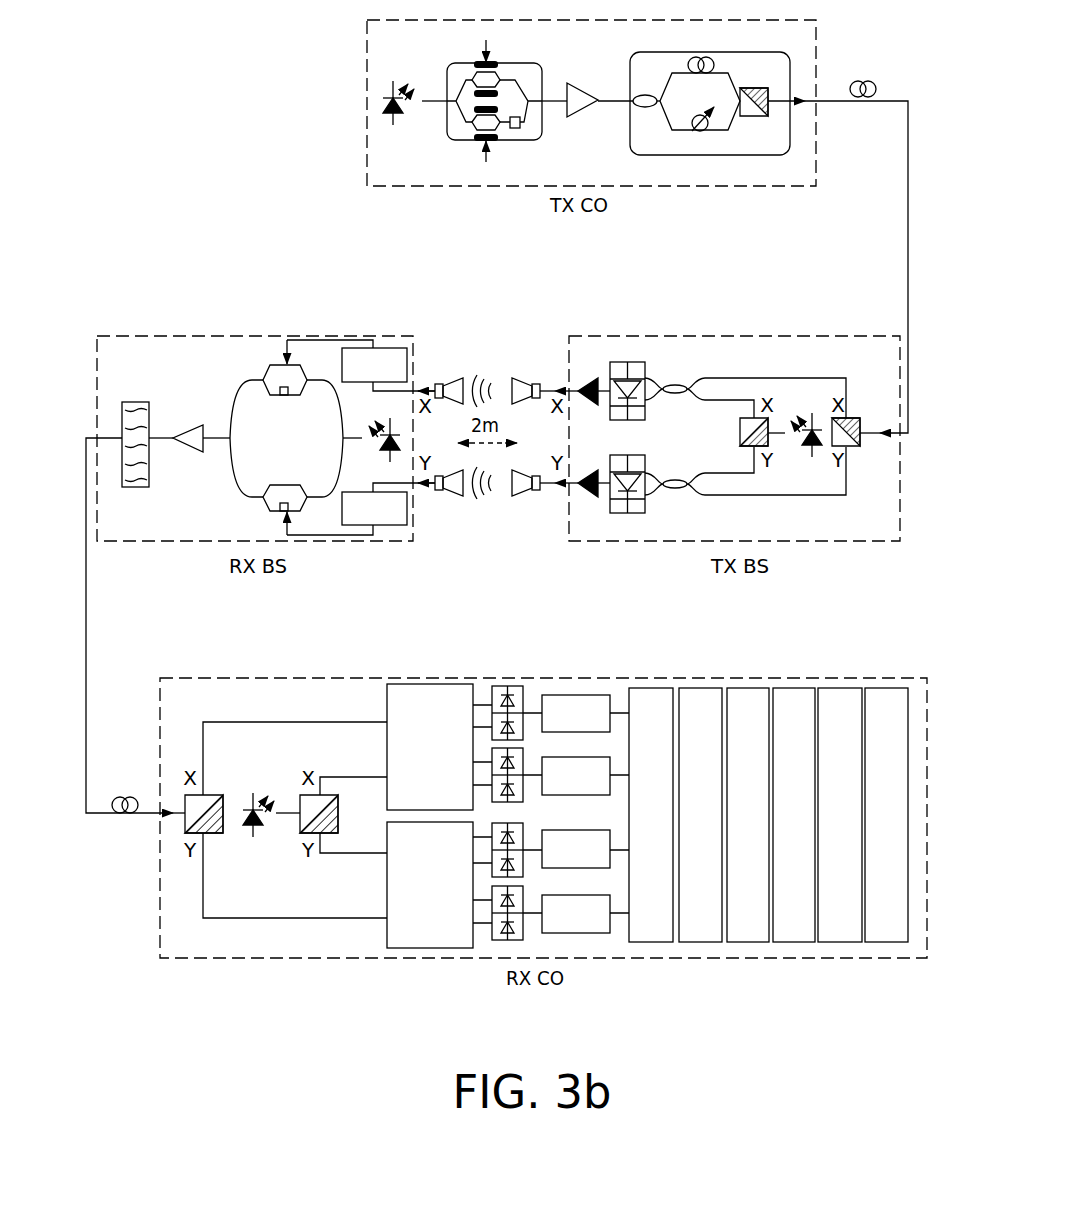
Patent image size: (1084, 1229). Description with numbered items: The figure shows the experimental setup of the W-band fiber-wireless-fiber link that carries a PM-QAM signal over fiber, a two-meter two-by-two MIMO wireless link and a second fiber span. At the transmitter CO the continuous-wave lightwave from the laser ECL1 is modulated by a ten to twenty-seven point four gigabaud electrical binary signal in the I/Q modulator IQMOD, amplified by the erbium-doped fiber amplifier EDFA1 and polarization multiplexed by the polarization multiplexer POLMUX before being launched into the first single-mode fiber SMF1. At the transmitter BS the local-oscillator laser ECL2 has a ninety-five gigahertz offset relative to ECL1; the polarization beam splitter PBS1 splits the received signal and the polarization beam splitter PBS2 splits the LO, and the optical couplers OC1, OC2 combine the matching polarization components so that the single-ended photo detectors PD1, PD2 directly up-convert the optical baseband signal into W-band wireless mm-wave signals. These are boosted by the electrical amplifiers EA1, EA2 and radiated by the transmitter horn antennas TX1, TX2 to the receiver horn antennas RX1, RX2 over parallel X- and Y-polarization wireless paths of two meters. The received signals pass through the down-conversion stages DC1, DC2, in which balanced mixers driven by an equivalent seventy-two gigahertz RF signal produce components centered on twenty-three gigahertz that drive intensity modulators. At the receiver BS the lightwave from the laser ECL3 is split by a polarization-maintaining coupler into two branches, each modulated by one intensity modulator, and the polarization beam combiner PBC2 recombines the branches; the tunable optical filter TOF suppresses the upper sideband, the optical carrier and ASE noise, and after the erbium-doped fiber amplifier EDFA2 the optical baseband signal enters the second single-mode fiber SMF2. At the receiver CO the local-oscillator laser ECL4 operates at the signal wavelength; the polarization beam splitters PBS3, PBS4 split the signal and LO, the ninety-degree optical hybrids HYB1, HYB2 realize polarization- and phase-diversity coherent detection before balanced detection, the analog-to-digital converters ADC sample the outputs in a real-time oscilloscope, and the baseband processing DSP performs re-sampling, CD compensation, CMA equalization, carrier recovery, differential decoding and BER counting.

The external cavity laser 1 ECL1 is at (398, 118).
The I/Q modulator IQMOD is at (475, 103).
The erbium-doped fiber amplifier EDFA1 is at (582, 114).
The polarization multiplexer POLMUX is at (710, 116).
The SMF-28 fiber SMF1 is at (863, 92).
The tunable optical filter TOF is at (135, 445).
The erbium-doped fiber amplifier EDFA2 is at (192, 454).
The polarization beam combiner PBC2 is at (286, 437).
The down-conversion DC1 is at (361, 365).
The down-conversion DC2 is at (361, 509).
The external cavity laser 3 ECL3 is at (380, 450).
The receiver horn antenna RX1 is at (448, 380).
The receiver horn antenna RX2 is at (448, 496).
The transmitter horn antenna TX1 is at (527, 380).
The transmitter horn antenna TX2 is at (527, 496).
The electrical amplifier EA1 is at (590, 379).
The electrical amplifier EA2 is at (590, 495).
The single-ended photo detector PD1 is at (627, 378).
The single-ended photo detector PD2 is at (627, 495).
The optical coupler OC1 is at (745, 388).
The optical coupler OC2 is at (745, 479).
The polarization beam splitter PBS1 is at (733, 432).
The polarization beam splitter PBS2 is at (863, 445).
The external cavity laser 2 ECL2 is at (800, 452).
The SMF-28 fiber SMF2 is at (125, 805).
The polarization beam splitter PBS3 is at (217, 799).
The external cavity laser 4 ECL4 is at (253, 827).
The polarization beam splitter PBS4 is at (341, 814).
The 90° optical hybrid HYB1 is at (430, 747).
The 90° optical hybrid HYB2 is at (430, 885).
The analog-to-digital converter ADC is at (576, 814).
The baseband digital signal processing DSP is at (768, 815).